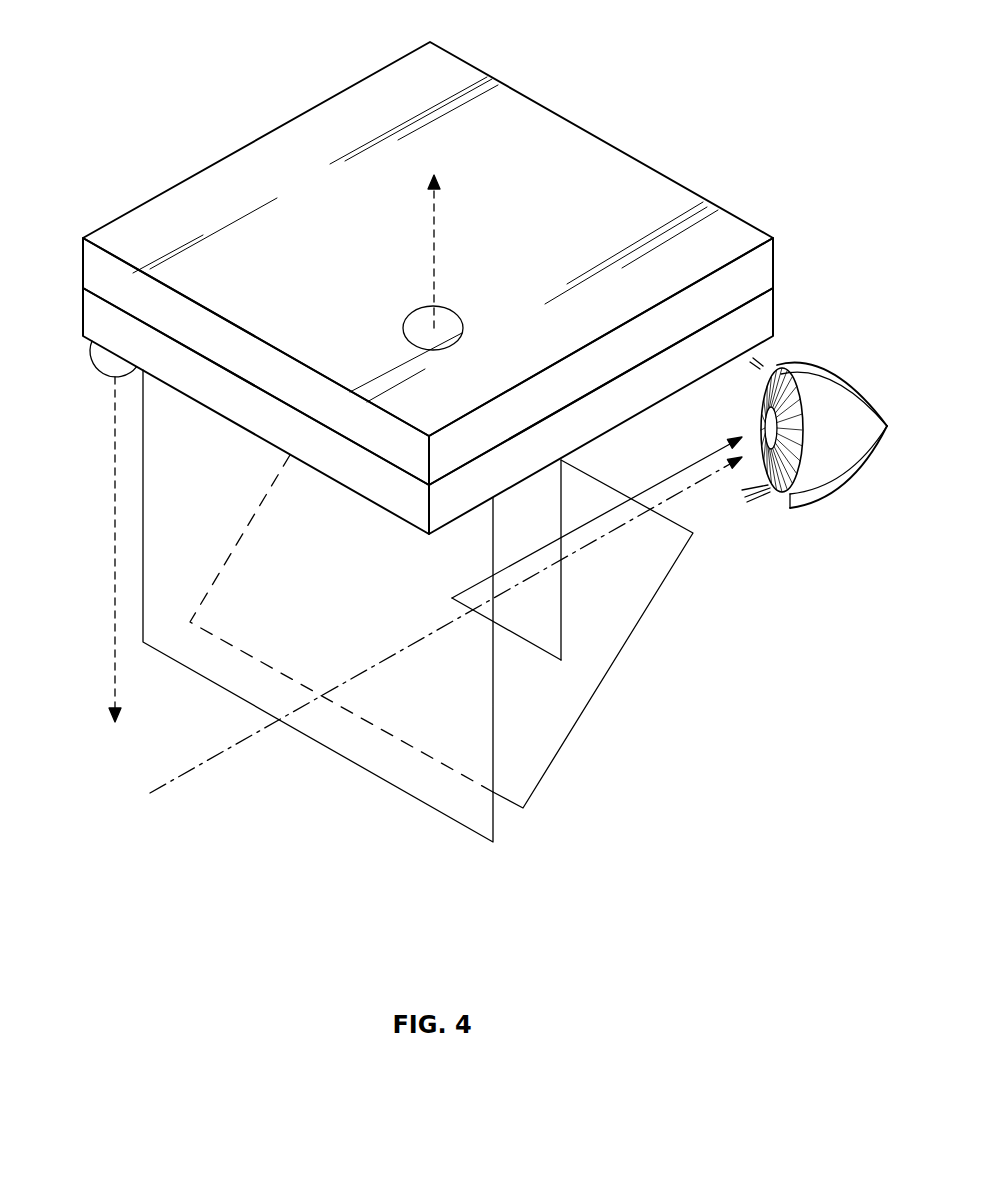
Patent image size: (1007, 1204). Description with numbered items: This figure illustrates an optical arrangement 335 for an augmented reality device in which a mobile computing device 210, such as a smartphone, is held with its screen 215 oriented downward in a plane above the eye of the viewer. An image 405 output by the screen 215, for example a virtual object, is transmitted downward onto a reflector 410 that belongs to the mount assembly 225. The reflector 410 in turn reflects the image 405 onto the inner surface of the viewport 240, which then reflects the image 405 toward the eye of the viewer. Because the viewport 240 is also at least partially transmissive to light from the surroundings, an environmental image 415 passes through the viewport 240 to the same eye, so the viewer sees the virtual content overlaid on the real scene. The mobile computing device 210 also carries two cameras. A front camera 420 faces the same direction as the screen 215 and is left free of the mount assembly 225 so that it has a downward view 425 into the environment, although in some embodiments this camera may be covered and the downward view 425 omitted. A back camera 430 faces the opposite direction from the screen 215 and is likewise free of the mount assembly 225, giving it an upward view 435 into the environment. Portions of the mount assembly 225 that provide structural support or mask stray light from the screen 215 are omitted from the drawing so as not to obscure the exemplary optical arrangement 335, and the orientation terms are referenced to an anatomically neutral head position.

The optical arrangement 335 is at (466, 288).
The mobile computing device 210 is at (760, 273).
The screen 215 is at (760, 323).
The back camera 430 is at (409, 330).
The upward view 435 is at (436, 200).
The front camera 420 is at (103, 368).
The downward view 425 is at (115, 657).
The image 405 is at (700, 461).
The reflector 410 is at (613, 663).
The environmental image 415 is at (198, 765).
The mount assembly 225 is at (444, 667).
The viewport 240 is at (477, 803).